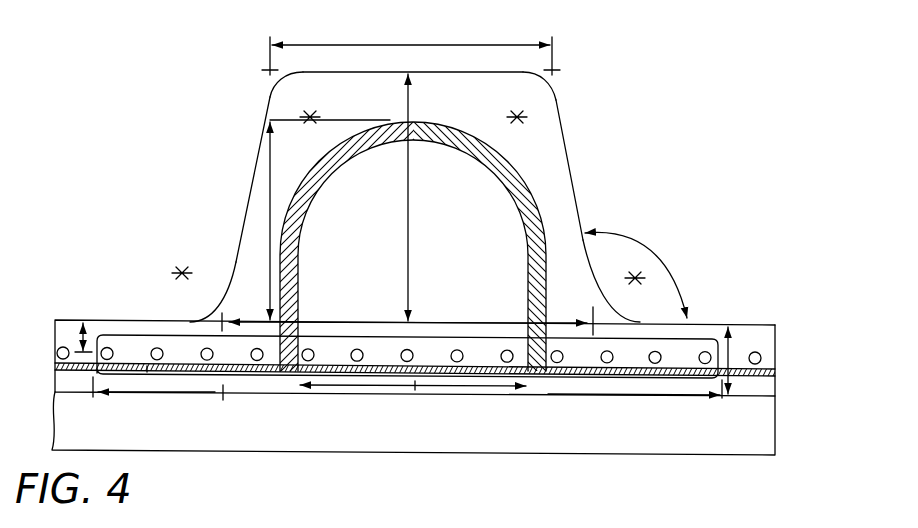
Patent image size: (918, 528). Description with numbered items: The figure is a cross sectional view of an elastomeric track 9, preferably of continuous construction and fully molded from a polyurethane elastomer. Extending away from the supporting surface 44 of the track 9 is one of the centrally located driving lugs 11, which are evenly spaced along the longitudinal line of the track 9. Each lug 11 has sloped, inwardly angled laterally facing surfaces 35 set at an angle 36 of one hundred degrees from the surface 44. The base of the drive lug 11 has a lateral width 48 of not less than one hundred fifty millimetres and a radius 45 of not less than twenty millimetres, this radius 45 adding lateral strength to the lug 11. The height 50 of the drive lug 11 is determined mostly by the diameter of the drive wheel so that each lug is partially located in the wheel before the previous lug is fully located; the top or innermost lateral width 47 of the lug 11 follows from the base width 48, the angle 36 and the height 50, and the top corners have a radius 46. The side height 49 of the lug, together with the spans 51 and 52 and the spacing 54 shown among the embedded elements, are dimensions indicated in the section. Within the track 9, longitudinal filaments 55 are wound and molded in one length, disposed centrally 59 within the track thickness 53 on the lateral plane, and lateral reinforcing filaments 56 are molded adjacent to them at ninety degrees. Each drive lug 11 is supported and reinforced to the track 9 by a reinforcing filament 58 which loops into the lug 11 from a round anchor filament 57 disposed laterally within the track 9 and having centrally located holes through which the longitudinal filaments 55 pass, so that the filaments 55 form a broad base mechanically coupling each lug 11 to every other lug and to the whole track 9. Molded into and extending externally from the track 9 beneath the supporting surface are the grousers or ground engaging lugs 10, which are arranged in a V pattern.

The elastomeric track 9 is at (165, 332).
The ground engaging lugs 10 is at (737, 428).
The driving lug 11 is at (530, 148).
The laterally facing surfaces 35 is at (254, 167).
The angle 36 is at (655, 252).
The supporting surface 44 is at (105, 320).
The base radius 45 is at (214, 306).
The top radius 46 is at (289, 85).
The top lateral width 47 is at (417, 36).
The base lateral width 48 is at (447, 322).
The side wall height 49 is at (268, 222).
The lug height 50 is at (415, 218).
The inner span 51 is at (415, 386).
The edge offset 52 is at (223, 392).
The track thickness 53 is at (730, 387).
The channel 54 is at (147, 372).
The longitudinal filaments 55 is at (612, 380).
The lateral reinforcing filaments 56 is at (575, 380).
The anchor filament 57 is at (478, 378).
The reinforcing filament 58 is at (313, 200).
The central position 59 is at (83, 322).